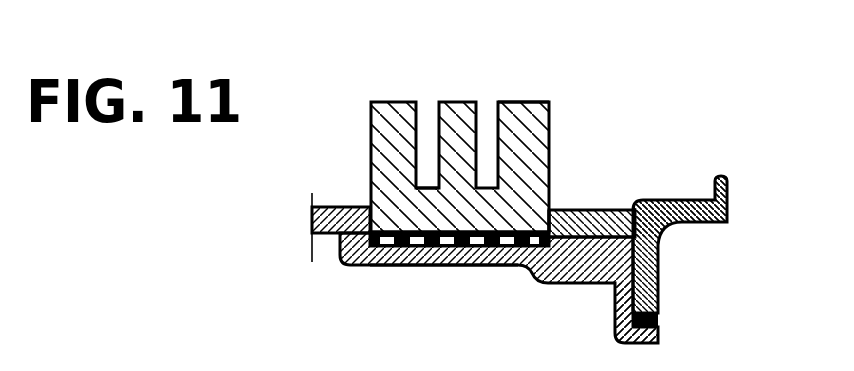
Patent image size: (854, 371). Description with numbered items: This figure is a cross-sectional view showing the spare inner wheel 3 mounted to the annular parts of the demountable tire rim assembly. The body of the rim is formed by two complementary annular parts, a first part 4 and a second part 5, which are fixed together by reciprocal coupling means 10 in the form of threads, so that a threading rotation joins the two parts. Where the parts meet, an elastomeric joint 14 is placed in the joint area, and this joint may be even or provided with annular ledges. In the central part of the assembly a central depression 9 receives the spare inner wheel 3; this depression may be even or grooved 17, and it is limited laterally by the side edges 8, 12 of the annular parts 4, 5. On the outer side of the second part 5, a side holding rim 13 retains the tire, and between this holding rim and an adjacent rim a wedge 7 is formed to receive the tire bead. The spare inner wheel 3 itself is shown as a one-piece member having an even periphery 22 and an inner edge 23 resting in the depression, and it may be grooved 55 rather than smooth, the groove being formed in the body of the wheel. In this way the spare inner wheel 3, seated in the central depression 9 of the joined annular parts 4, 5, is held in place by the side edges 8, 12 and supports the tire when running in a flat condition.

The spare inner wheel 3 is at (349, 83).
The first annular part 4 is at (320, 286).
The second annular part 5 is at (708, 251).
The wedge 7 is at (686, 182).
The side edge 8 is at (368, 207).
The central depression 9 is at (403, 268).
The reciprocal coupling means 10 is at (615, 295).
The side edge 12 is at (550, 210).
The side holding rim 13 is at (728, 198).
The elastomeric joint 14 is at (660, 313).
The grooves 17 is at (447, 237).
The even periphery 22 is at (520, 98).
The inner edge 23 is at (505, 231).
The groove 55 is at (427, 140).